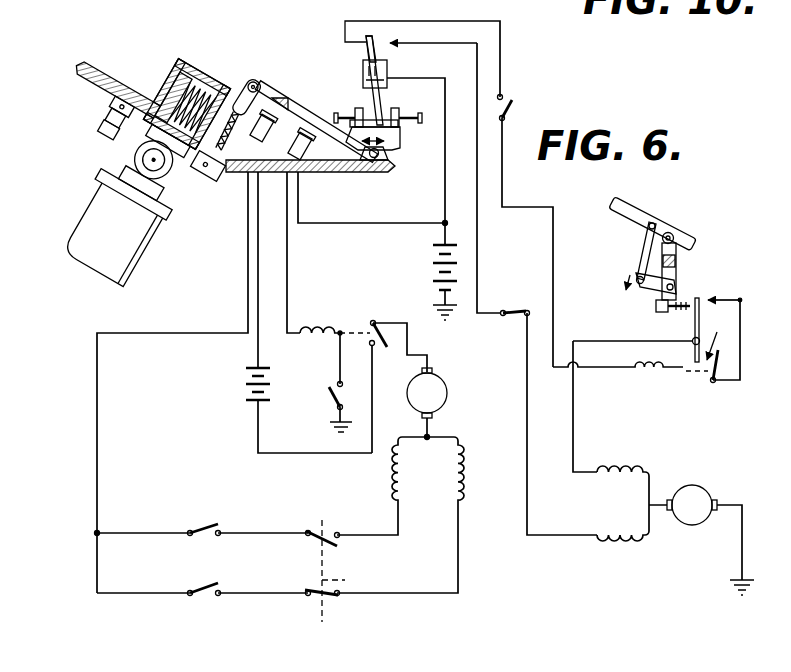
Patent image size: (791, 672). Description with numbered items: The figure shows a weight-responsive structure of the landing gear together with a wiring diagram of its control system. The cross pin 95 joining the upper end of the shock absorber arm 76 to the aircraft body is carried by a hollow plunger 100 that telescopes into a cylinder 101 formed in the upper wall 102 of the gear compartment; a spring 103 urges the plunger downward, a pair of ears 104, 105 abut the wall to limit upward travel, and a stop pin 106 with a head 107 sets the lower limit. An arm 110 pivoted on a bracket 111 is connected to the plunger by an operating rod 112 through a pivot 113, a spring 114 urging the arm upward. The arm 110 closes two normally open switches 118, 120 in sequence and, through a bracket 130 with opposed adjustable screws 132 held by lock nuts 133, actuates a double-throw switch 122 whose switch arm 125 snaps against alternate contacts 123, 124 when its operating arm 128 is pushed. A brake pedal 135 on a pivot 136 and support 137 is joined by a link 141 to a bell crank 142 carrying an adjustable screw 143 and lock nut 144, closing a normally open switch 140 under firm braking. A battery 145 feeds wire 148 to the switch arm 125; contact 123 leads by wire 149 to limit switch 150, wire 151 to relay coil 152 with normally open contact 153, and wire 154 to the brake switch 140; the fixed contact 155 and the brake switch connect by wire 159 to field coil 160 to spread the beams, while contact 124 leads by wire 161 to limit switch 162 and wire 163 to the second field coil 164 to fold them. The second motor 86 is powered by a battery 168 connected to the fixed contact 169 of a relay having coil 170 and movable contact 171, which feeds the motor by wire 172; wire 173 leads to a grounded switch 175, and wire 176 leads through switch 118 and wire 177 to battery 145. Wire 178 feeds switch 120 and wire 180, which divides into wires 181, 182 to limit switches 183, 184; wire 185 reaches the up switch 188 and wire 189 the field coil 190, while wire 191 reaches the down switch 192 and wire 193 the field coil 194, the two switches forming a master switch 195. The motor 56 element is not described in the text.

The motor #2 56 is at (720, 480).
The shock absorber arm 76 is at (96, 206).
The motor 86 is at (447, 396).
The cross pin 95 is at (143, 160).
The hollow plunger 100 is at (153, 114).
The cylinder 101 is at (197, 64).
The upper wall 102 is at (92, 70).
The spring 103 is at (216, 82).
The ear 104 is at (112, 105).
The ear 105 is at (221, 173).
The stop pin 106 is at (108, 122).
The head 107 is at (104, 140).
The arm 110 is at (318, 108).
The bracket 111 is at (389, 158).
The operating rod 112 is at (262, 92).
The pivot 113 is at (262, 88).
The spring 114 is at (251, 82).
The switch 118 is at (305, 172).
The switch 120 is at (264, 135).
The double-throw switch 122 is at (392, 74).
The contact 123 is at (392, 21).
The contact 124 is at (400, 40).
The switch arm 125 is at (365, 55).
The operating arm 128 is at (383, 100).
The bracket 130 is at (400, 147).
The adjustable screws 132 is at (352, 113).
The lock nuts 133 is at (318, 146).
The brake pedal 135 is at (669, 230).
The pivot 136 is at (676, 236).
The support 137 is at (678, 272).
The switch 140 is at (738, 300).
The link 141 is at (645, 248).
The bell crank 142 is at (648, 292).
The adjustable screw 143 is at (656, 314).
The lock nut 144 is at (693, 318).
The battery 145 is at (432, 270).
The wire 148 is at (438, 78).
The wire 149 is at (502, 62).
The limit switch 150 is at (513, 108).
The wire 151 is at (500, 150).
The relay coil 152 is at (646, 372).
The contact 153 is at (717, 350).
The wire 154 is at (740, 380).
The fixed contact 155 is at (724, 334).
The wire 159 is at (601, 341).
The field coil 160 is at (644, 468).
The wire 161 is at (478, 258).
The limit switch 162 is at (516, 311).
The wire 163 is at (562, 535).
The field coil 164 is at (628, 538).
The battery 168 is at (252, 386).
The fixed contact 169 is at (370, 348).
The relay coil 170 is at (321, 326).
The movable relay contact 171 is at (383, 347).
The wire 172 is at (409, 345).
The wire 173 is at (338, 366).
The grounded switch 175 is at (331, 400).
The wire 176 is at (288, 262).
The wire 177 is at (411, 223).
The wire 178 is at (257, 352).
The wire 180 is at (98, 456).
The wire 181 is at (156, 533).
The wire 182 is at (136, 593).
The limit switch 183 is at (206, 527).
The limit switch 184 is at (211, 598).
The wire 185 is at (279, 533).
The up switch 188 is at (338, 533).
The wire 189 is at (381, 535).
The field coil 190 is at (388, 490).
The wire 191 is at (251, 593).
The down switch 192 is at (309, 595).
The wire 193 is at (409, 593).
The field coil 194 is at (456, 510).
The master switch 195 is at (345, 580).